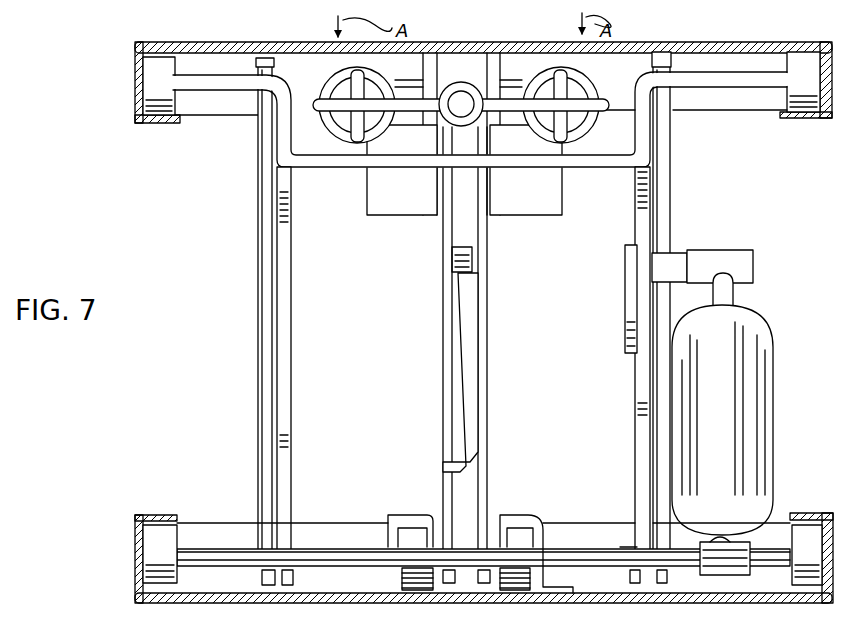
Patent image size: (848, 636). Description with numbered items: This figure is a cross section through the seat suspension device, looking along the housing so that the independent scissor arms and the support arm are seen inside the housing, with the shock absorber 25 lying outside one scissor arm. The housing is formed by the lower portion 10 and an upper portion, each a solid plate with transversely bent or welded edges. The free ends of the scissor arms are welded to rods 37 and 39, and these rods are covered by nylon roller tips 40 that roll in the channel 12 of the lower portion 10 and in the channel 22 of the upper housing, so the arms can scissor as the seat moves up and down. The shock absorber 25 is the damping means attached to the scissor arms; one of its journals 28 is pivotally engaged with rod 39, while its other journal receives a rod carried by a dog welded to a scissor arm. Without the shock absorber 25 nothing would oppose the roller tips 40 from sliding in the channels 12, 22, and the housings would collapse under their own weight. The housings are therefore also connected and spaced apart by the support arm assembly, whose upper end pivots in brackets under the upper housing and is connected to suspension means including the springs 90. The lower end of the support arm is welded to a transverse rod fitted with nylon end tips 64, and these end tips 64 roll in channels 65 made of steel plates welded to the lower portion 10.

The lower portion of housing 10 is at (137, 98).
The channel of lower housing 12 is at (190, 523).
The channel of upper housing 22 is at (190, 112).
The shock absorber 25 is at (775, 412).
The journal 28 is at (730, 578).
The rod 37 is at (333, 175).
The rod 39 is at (217, 552).
The nylon roller tip 40 is at (157, 547).
The nylon end tip 64 is at (420, 592).
The channel 65 is at (530, 603).
The spring 90 is at (383, 147).